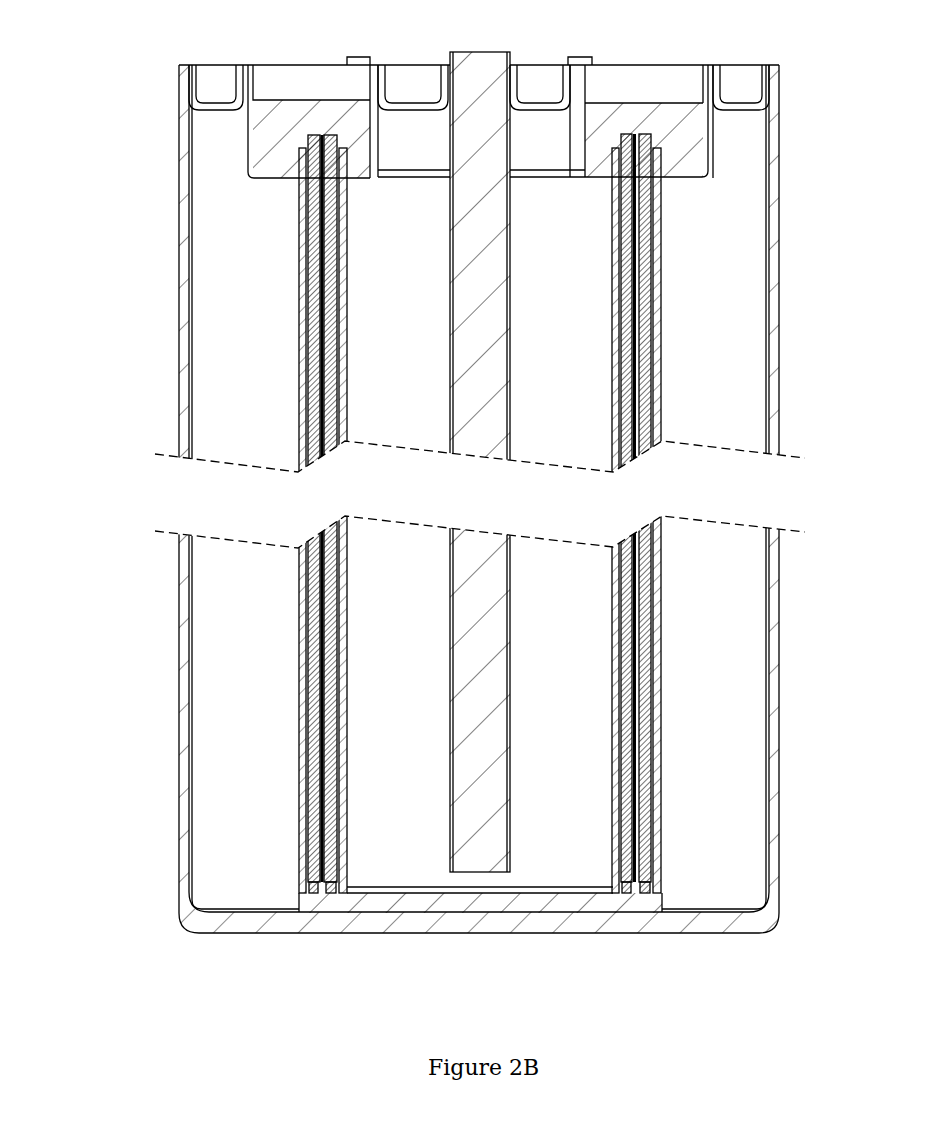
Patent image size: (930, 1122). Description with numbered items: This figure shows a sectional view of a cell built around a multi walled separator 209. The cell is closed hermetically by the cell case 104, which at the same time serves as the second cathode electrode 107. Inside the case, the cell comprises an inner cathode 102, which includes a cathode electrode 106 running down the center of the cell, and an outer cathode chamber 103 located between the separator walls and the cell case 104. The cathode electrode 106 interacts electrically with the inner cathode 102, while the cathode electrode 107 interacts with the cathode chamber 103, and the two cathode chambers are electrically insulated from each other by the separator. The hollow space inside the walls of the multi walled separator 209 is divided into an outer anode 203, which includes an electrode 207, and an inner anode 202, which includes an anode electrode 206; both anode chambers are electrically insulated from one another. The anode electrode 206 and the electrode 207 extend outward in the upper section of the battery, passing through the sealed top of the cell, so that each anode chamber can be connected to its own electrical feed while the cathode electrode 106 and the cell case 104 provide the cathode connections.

The inner cathode 102 is at (363, 533).
The cathode chamber 103 is at (233, 602).
The cell case 104 is at (180, 306).
The cathode electrode 106 is at (494, 78).
The cathode electrode 107 is at (188, 360).
The inner anode 202 is at (333, 893).
The outer anode 203 is at (313, 893).
The anode electrode 206 is at (331, 134).
The electrode 207 is at (313, 134).
The multi walled separator 209 is at (298, 433).